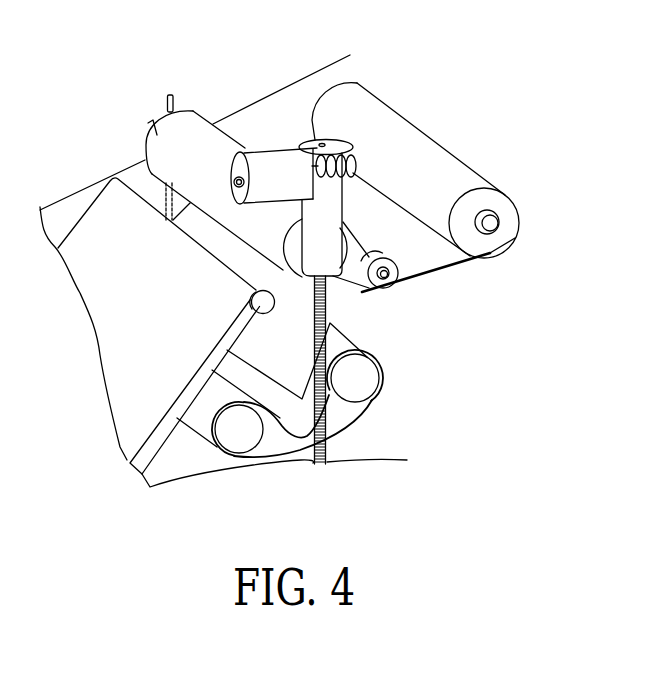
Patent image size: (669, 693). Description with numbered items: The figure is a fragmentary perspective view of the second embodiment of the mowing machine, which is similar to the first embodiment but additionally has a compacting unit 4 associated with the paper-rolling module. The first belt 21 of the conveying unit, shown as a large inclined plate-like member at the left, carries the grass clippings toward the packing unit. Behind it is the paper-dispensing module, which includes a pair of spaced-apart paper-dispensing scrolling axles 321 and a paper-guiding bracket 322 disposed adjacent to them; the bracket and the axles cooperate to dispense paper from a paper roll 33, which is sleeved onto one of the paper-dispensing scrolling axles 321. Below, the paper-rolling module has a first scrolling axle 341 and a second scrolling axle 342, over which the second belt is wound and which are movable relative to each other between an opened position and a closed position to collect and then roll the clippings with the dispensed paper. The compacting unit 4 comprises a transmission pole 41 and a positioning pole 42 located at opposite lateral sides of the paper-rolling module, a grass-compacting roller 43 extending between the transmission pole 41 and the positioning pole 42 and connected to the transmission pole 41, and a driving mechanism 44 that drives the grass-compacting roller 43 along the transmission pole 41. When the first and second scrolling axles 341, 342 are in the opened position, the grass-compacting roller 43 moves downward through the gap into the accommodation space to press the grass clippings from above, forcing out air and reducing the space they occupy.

The compacting unit 4 is at (100, 77).
The first belt 21 is at (107, 200).
The paper roll 33 is at (430, 143).
The paper-dispensing scrolling axles 321 is at (493, 225).
The paper-guiding bracket 322 is at (445, 268).
The first scrolling axle 341 is at (377, 375).
The second scrolling axle 342 is at (241, 447).
The transmission pole 41 is at (347, 417).
The positioning pole 42 is at (167, 101).
The grass-compacting roller 43 is at (195, 110).
The driving mechanism 44 is at (273, 140).